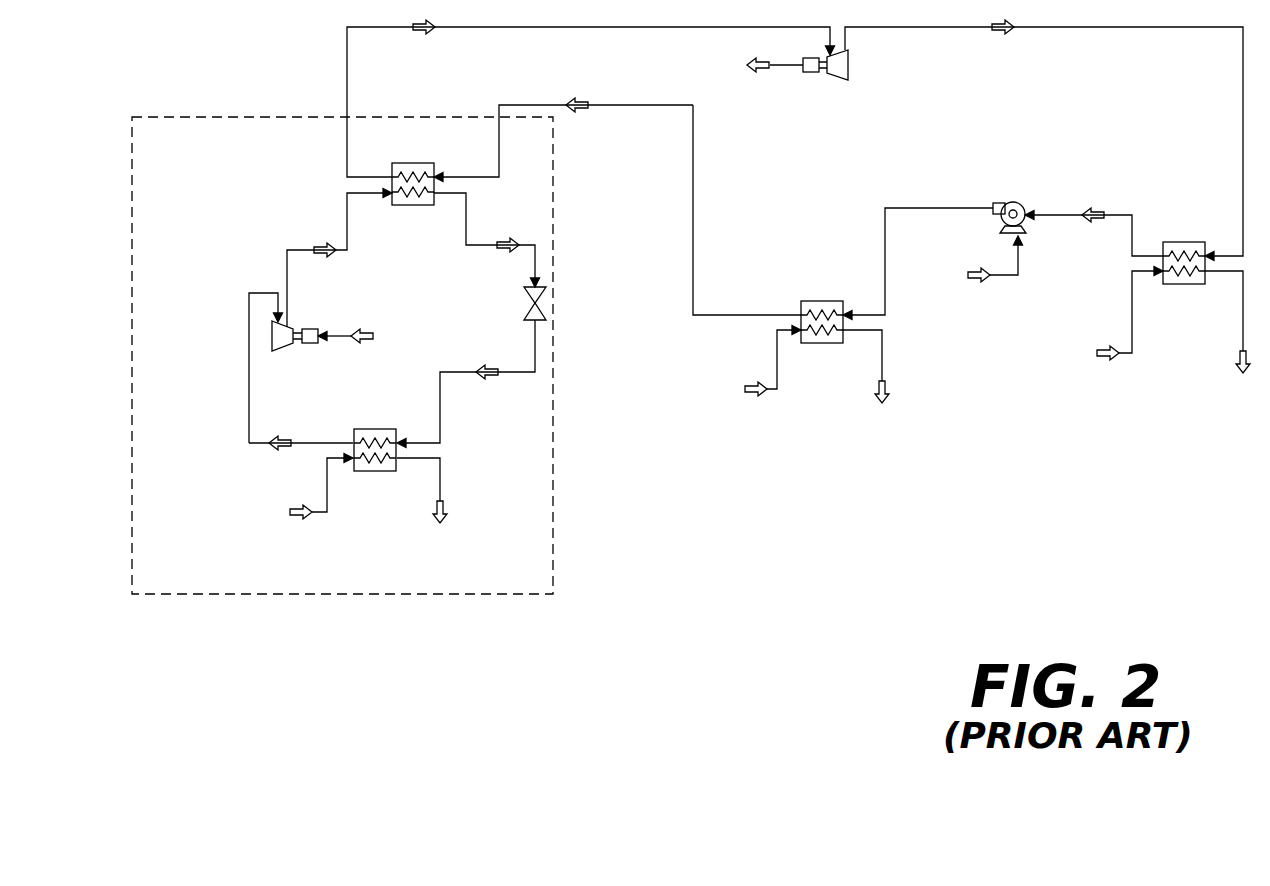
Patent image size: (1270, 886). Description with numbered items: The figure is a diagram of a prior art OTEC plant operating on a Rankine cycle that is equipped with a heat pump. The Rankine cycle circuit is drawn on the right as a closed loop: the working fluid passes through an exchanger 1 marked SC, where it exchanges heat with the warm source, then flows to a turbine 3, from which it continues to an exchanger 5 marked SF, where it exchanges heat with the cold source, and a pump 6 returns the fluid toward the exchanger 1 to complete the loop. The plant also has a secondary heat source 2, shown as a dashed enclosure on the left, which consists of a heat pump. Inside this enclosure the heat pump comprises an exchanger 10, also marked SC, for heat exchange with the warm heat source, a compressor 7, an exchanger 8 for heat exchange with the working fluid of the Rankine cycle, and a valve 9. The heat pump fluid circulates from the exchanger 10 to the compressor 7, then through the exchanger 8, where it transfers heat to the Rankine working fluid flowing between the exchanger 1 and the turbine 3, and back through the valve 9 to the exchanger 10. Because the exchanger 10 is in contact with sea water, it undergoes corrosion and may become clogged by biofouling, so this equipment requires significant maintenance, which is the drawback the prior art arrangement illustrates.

The exchanger 1 is at (822, 301).
The secondary heat source 2 is at (553, 521).
The turbine 3 is at (850, 65).
The exchanger 5 is at (1178, 242).
The pump 6 is at (1013, 203).
The compressor 7 is at (287, 350).
The exchanger 8 is at (413, 206).
The valve 9 is at (524, 292).
The exchanger 10 is at (372, 428).